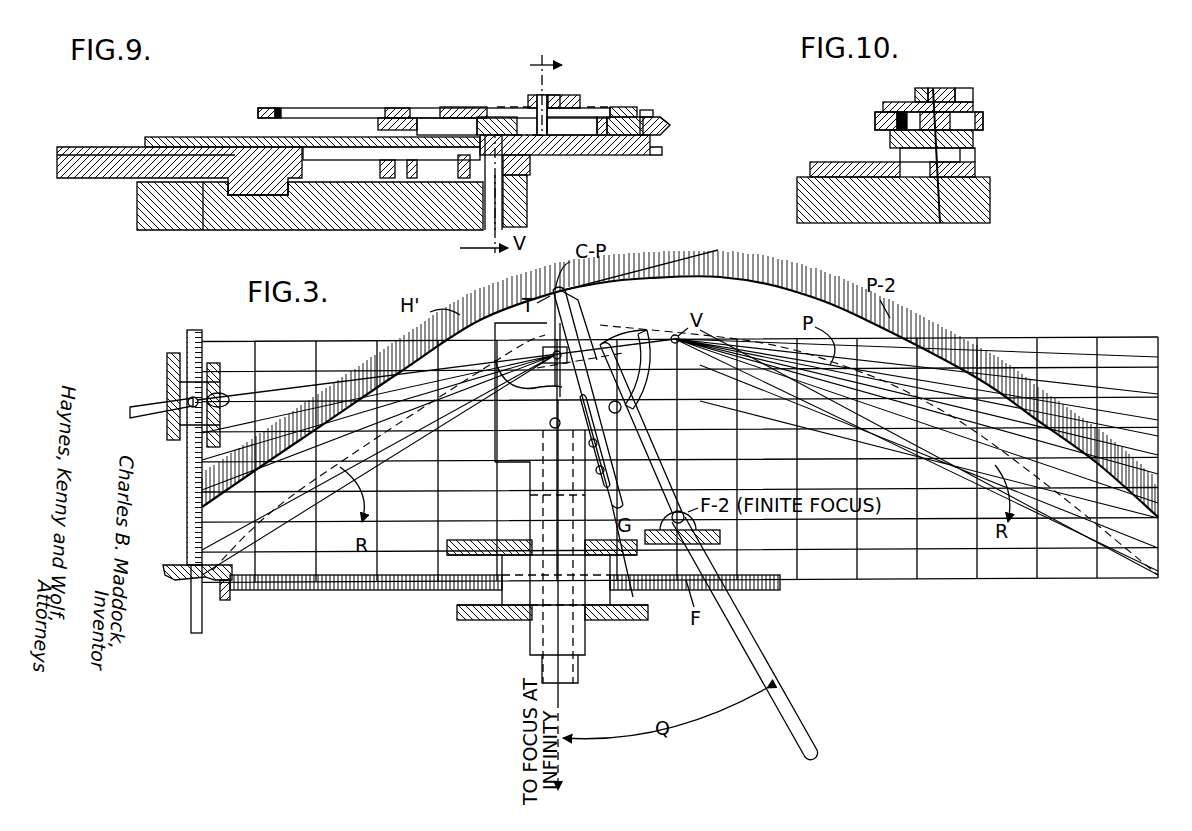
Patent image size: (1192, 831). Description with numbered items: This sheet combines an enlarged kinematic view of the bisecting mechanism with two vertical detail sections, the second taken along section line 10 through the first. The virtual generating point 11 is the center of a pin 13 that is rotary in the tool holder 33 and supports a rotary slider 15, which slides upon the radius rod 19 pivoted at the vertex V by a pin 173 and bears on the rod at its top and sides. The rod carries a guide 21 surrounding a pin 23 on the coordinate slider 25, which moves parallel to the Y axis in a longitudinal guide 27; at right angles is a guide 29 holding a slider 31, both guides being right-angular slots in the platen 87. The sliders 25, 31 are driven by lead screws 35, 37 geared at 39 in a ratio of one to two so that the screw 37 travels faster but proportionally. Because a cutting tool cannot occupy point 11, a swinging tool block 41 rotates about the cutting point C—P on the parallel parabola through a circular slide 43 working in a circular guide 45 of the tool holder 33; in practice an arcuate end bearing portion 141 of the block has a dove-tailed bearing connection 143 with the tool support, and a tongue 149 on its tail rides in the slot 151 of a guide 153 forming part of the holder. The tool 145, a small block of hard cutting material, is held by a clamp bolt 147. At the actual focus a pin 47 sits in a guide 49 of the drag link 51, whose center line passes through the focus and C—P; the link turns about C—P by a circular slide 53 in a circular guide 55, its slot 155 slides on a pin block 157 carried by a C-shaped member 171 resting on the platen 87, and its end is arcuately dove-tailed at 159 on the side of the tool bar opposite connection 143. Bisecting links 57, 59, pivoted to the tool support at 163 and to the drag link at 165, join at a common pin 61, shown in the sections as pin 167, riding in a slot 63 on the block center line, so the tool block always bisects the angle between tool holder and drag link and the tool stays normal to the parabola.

In FIG. 9, the section line 10 is at (501, 152).
In FIG. 3, the virtual generating point 11 is at (553, 352).
In FIG. 9, the pin 13 is at (532, 173).
In FIG. 10, the pin 13 is at (900, 140).
In FIG. 3, the pin 13 is at (545, 350).
In FIG. 9, the rotary slider 15 is at (458, 160).
In FIG. 10, the rotary slider 15 is at (965, 156).
In FIG. 3, the rotary slider 15 is at (596, 300).
In FIG. 9, the radius rod 19 is at (527, 193).
In FIG. 10, the radius rod 19 is at (822, 162).
In FIG. 3, the radius rod 19 is at (300, 388).
In FIG. 3, the guide 21 is at (145, 410).
In FIG. 3, the pin 23 is at (178, 402).
In FIG. 3, the coordinate slider 25 is at (185, 410).
In FIG. 3, the longitudinal guide 27 is at (205, 365).
In FIG. 9, the guide 29 is at (262, 197).
In FIG. 3, the guide 29 is at (490, 598).
In FIG. 9, the slider 31 is at (116, 147).
In FIG. 3, the slider 31 is at (510, 602).
In FIG. 9, the tool holder 33 is at (205, 137).
In FIG. 3, the tool holder 33 is at (530, 508).
In FIG. 3, the lead screw 35 is at (190, 523).
In FIG. 3, the lead screw 37 is at (350, 590).
In FIG. 3, the gearing 39 is at (218, 590).
In FIG. 9, the swinging tool block 41 is at (668, 130).
In FIG. 3, the swinging tool block 41 is at (565, 294).
In FIG. 3, the circular slide 43 is at (549, 425).
In FIG. 3, the circular guide 45 is at (520, 392).
In FIG. 3, the pin 47 is at (718, 538).
In FIG. 3, the guide 49 is at (705, 562).
In FIG. 9, the drag link 51 is at (358, 108).
In FIG. 3, the drag link 51 is at (640, 450).
In FIG. 3, the circular slide 53 is at (622, 372).
In FIG. 3, the circular guide 55 is at (640, 328).
In FIG. 9, the bisecting link 57 is at (532, 100).
In FIG. 10, the bisecting link 57 is at (890, 104).
In FIG. 3, the bisecting link 57 is at (588, 443).
In FIG. 9, the bisecting link 59 is at (554, 95).
In FIG. 10, the bisecting link 59 is at (945, 88).
In FIG. 3, the bisecting link 59 is at (622, 413).
In FIG. 3, the pin 61 is at (600, 447).
In FIG. 9, the slot 63 is at (572, 135).
In FIG. 3, the slot 63 is at (606, 472).
In FIG. 9, the platen 87 is at (325, 223).
In FIG. 10, the platen 87 is at (890, 222).
In FIG. 9, the arcuate end bearing portion 141 is at (602, 135).
In FIG. 10, the arcuate end bearing portion 141 is at (985, 124).
In FIG. 9, the dove-tailed bearing connection 143 is at (632, 135).
In FIG. 9, the tool 145 is at (668, 114).
In FIG. 9, the clamp bolt 147 is at (646, 110).
In FIG. 9, the tongue 149 is at (490, 117).
In FIG. 9, the slot 151 is at (445, 118).
In FIG. 9, the guide 153 is at (478, 124).
In FIG. 9, the slot 155 is at (294, 108).
In FIG. 9, the pin block 157 is at (398, 108).
In FIG. 9, the dove-tailed slotted connection 159 is at (620, 107).
In FIG. 10, the pivot 163 is at (880, 120).
In FIG. 10, the pivot 165 is at (962, 88).
In FIG. 9, the pin 167 is at (542, 94).
In FIG. 10, the pin 167 is at (925, 90).
In FIG. 9, the C-shaped member 171 is at (380, 166).
In FIG. 9, the pin 173 is at (515, 215).
In FIG. 10, the pin 173 is at (945, 220).